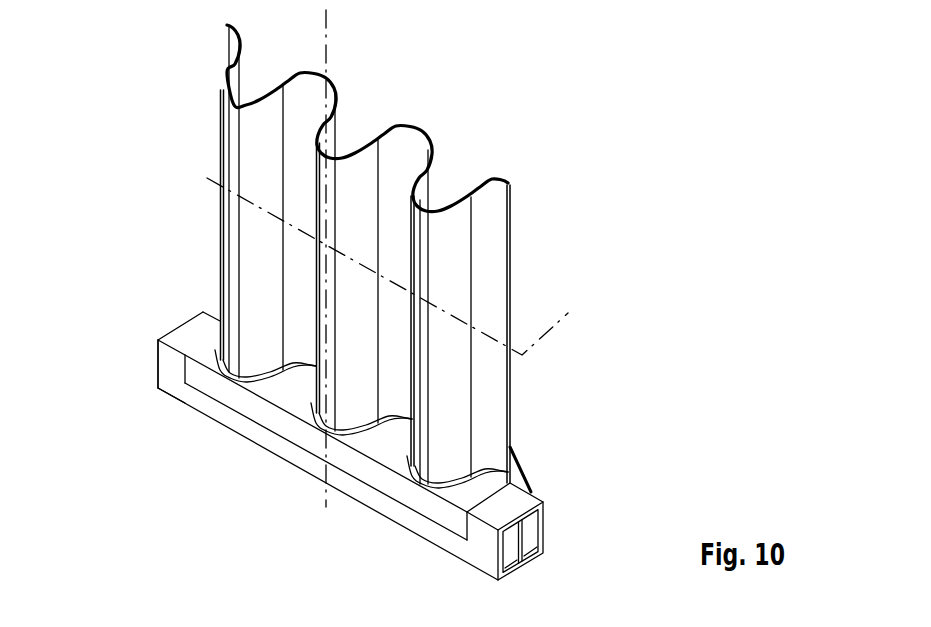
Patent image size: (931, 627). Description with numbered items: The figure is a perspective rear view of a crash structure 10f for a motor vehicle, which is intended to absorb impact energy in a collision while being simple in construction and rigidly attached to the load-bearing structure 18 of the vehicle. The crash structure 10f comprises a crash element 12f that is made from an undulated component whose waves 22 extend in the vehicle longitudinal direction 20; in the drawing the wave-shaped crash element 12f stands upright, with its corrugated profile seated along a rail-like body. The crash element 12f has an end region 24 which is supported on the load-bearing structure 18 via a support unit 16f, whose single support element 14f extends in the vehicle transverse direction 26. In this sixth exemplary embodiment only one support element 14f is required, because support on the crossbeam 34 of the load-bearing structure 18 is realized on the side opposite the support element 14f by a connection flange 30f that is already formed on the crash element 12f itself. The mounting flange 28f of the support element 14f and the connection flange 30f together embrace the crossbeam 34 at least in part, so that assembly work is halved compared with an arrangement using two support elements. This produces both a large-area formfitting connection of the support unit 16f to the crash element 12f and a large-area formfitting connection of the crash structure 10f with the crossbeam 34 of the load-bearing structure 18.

The crash structure 10f is at (178, 128).
The crash element 12f is at (400, 145).
The support element 14f is at (511, 448).
The support unit 16f is at (562, 472).
The load-bearing structure 18 is at (163, 380).
The crossbeam 34 is at (171, 371).
The vehicle longitudinal direction 20 is at (326, 508).
The waves 22 is at (225, 223).
The end region 24 is at (172, 308).
The vehicle transverse direction 26 is at (569, 307).
The mounting flange 28f is at (545, 496).
The connection flange 30f is at (418, 492).